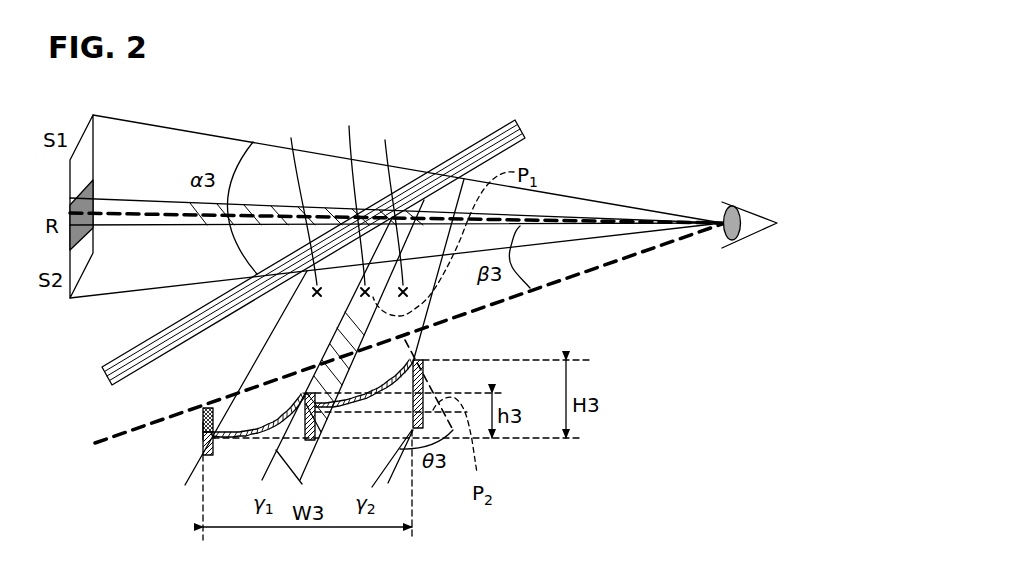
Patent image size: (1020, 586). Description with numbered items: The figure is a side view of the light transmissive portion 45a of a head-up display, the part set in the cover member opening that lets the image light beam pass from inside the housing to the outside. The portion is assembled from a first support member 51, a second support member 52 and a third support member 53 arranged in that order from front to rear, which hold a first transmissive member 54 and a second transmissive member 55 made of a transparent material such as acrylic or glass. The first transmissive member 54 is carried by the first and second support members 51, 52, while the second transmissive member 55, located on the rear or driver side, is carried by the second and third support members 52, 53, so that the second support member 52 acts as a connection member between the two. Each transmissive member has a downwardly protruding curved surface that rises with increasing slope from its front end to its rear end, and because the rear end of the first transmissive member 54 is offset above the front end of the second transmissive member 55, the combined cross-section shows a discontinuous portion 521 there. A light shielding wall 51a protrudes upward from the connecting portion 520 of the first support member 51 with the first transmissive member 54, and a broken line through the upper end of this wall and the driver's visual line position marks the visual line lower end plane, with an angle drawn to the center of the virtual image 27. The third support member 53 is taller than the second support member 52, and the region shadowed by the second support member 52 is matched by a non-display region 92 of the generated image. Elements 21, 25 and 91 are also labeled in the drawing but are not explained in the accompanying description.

The half mirror 21 is at (488, 141).
The lens 25 is at (748, 208).
The virtual image 27 is at (83, 172).
The light transmissive portion 45a is at (507, 350).
The first support member 51 is at (206, 408).
The light shielding wall 51a is at (203, 422).
The second support member 52 is at (308, 393).
The third support member 53 is at (421, 360).
The first transmissive member 54 is at (260, 442).
The second transmissive member 55 is at (352, 410).
The light ray 91 is at (345, 204).
The non-display region 92 is at (354, 199).
The connecting portion 520 is at (214, 436).
The discontinuous portion 521 is at (307, 392).